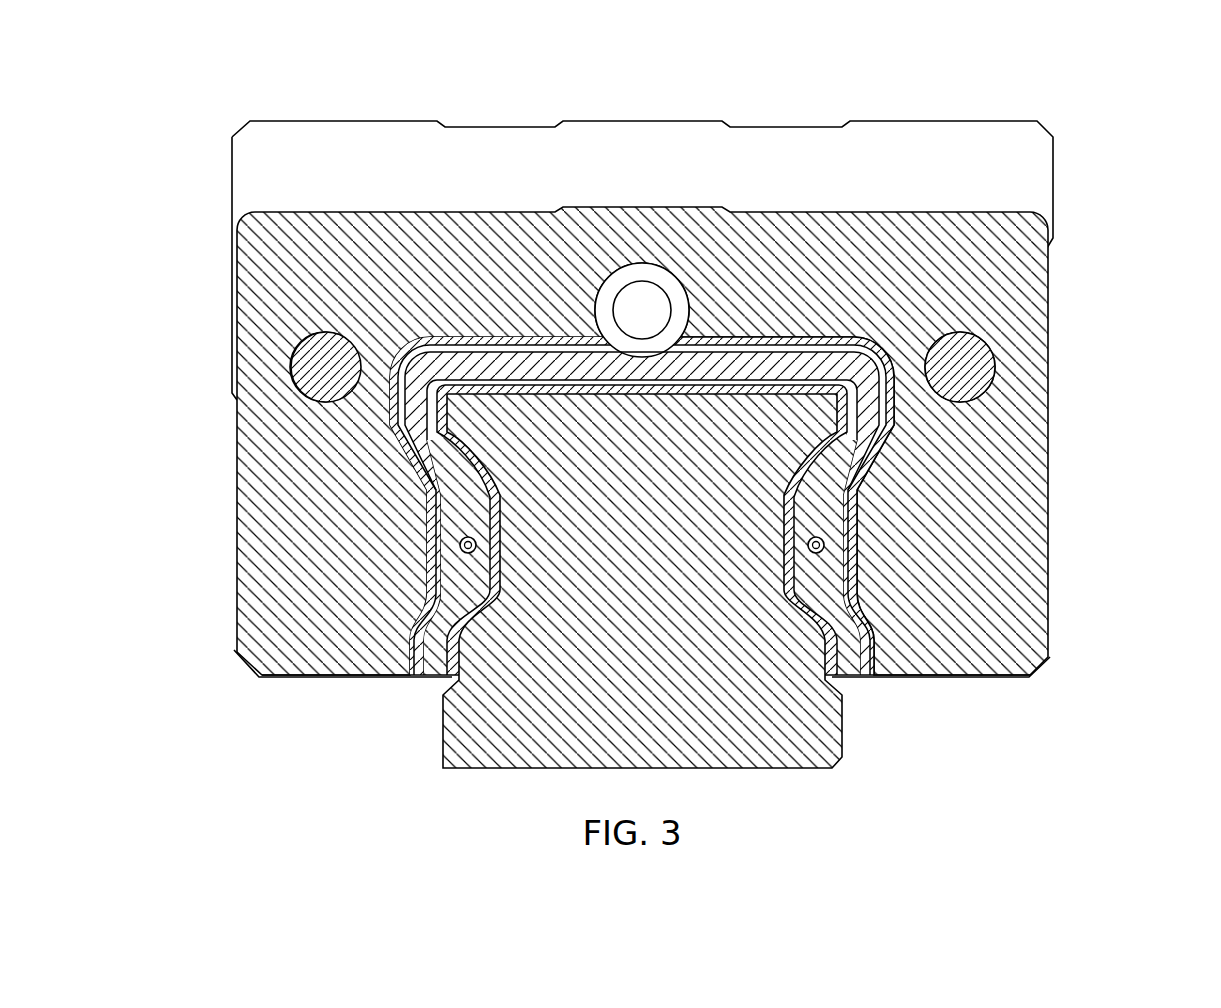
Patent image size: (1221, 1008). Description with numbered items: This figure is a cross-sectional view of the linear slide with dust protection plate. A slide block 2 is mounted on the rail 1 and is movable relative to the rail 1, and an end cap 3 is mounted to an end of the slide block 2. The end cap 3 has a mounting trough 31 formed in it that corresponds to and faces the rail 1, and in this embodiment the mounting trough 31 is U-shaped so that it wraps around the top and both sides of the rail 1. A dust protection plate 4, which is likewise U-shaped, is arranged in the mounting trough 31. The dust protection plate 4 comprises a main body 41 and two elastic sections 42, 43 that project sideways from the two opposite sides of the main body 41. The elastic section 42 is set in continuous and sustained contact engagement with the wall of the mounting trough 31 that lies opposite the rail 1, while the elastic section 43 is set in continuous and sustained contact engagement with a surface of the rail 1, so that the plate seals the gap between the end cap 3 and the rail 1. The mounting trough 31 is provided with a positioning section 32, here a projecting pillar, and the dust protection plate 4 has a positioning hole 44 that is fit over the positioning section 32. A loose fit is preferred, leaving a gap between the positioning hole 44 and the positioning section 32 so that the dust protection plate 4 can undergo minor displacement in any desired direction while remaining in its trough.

The rail 1 is at (787, 720).
The slide block 2 is at (1022, 160).
The end cap 3 is at (1013, 327).
The mounting trough 31 is at (858, 521).
The positioning section 32 is at (477, 546).
The dust protection plate 4 is at (460, 580).
The main body 41 is at (470, 525).
The elastic section 42 is at (438, 487).
The elastic section 43 is at (437, 427).
The positioning hole 44 is at (478, 556).